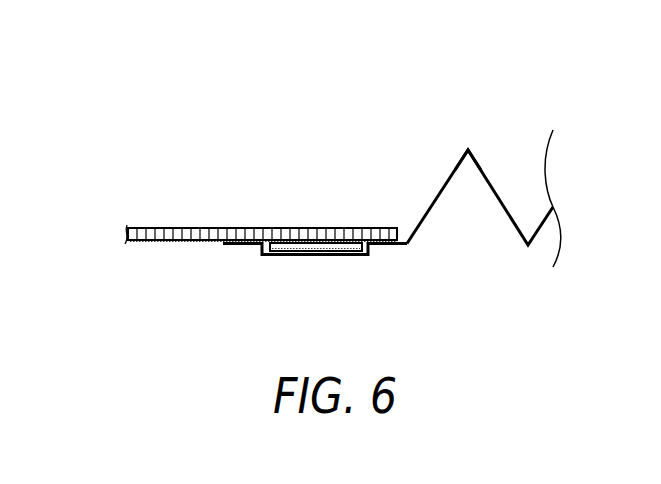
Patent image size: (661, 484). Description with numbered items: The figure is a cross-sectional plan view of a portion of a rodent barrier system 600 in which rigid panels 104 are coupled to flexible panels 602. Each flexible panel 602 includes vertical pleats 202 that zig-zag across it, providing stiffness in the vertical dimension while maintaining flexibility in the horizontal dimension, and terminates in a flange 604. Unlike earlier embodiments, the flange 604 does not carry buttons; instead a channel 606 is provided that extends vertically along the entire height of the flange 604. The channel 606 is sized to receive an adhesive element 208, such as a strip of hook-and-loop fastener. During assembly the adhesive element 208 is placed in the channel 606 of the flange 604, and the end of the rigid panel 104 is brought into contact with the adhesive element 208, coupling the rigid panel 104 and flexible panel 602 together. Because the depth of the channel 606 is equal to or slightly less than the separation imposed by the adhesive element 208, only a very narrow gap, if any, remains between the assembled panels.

The rodent barrier system 600 is at (179, 121).
The rigid panel 104 is at (240, 227).
The flange 604 is at (235, 246).
The channel 606 is at (297, 256).
The adhesive element 208 is at (350, 251).
The pleat 202 is at (488, 182).
The flexible panel 602 is at (450, 182).